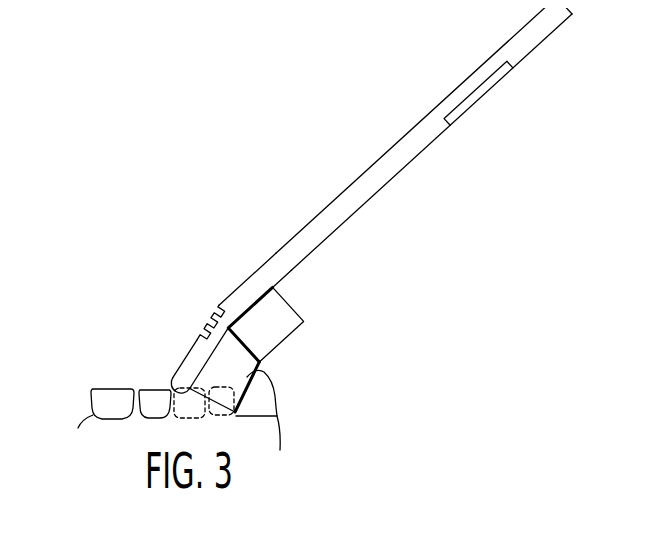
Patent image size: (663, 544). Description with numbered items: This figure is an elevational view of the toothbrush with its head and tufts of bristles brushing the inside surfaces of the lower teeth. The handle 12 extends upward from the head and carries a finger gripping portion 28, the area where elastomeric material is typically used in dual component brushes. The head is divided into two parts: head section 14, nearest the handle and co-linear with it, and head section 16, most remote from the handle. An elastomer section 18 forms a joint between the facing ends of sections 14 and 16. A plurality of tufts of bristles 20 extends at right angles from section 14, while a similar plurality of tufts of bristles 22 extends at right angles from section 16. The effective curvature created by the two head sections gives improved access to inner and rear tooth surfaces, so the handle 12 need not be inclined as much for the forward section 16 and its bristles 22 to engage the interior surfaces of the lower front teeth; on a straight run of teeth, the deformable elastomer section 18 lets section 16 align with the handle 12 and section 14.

The handle 12 is at (316, 226).
The head section 14 is at (261, 281).
The head section 16 is at (188, 363).
The elastomer section 18 is at (189, 302).
The tufts of bristles 20 is at (285, 316).
The tufts of bristles 22 is at (240, 381).
The finger gripping portion 28 is at (500, 76).